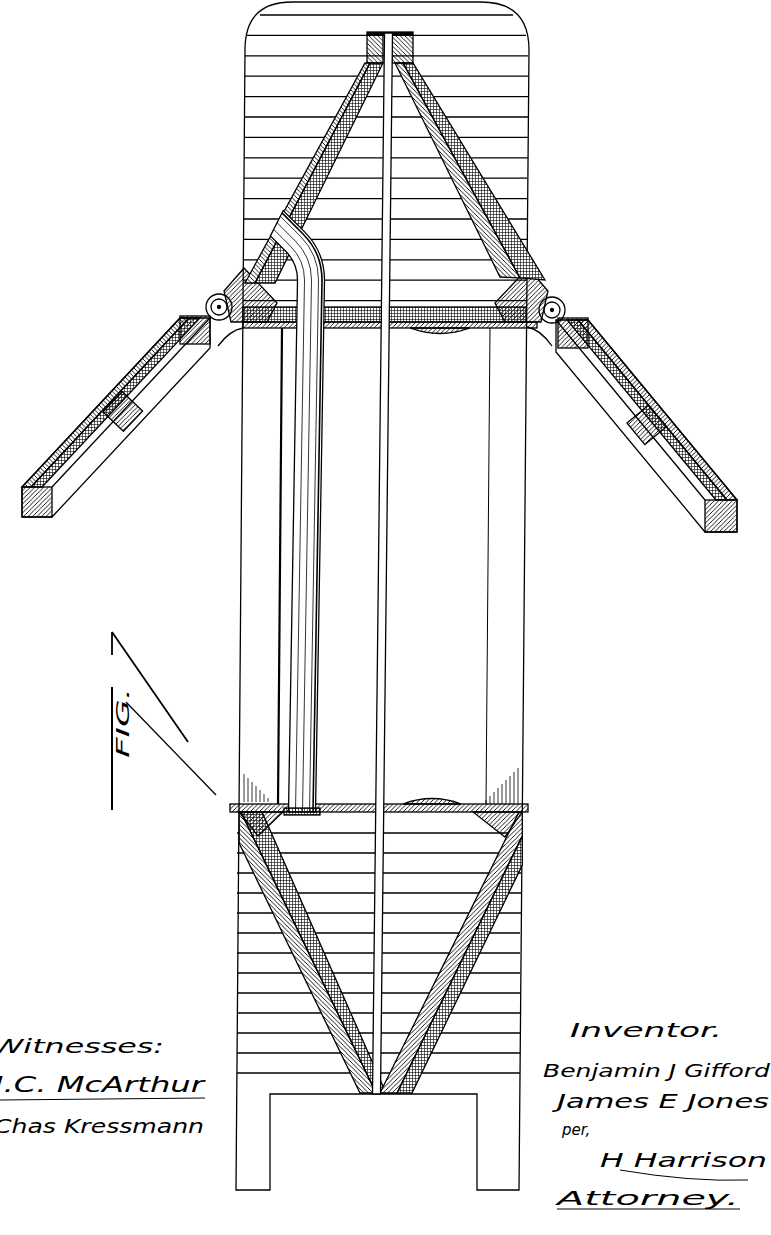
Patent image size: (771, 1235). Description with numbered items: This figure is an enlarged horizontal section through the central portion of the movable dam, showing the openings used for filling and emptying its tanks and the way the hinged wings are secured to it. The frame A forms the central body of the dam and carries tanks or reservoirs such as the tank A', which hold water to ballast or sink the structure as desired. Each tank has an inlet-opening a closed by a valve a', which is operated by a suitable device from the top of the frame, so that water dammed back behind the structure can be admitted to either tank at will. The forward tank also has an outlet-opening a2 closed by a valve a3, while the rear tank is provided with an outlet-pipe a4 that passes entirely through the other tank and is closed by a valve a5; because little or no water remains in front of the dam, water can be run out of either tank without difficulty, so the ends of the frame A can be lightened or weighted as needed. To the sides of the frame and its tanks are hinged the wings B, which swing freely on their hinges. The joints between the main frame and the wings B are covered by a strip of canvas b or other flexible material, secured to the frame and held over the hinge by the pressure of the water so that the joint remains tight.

The frame A is at (375, 596).
The tank A' is at (385, 158).
The wing B is at (379, 424).
The inlet-opening a is at (386, 295).
The valve a' is at (383, 579).
The outlet-opening a2 is at (462, 564).
The valve a3 is at (363, 562).
The outlet-pipe a4 is at (303, 512).
The valve a5 is at (298, 816).
The strip of canvas b is at (224, 331).